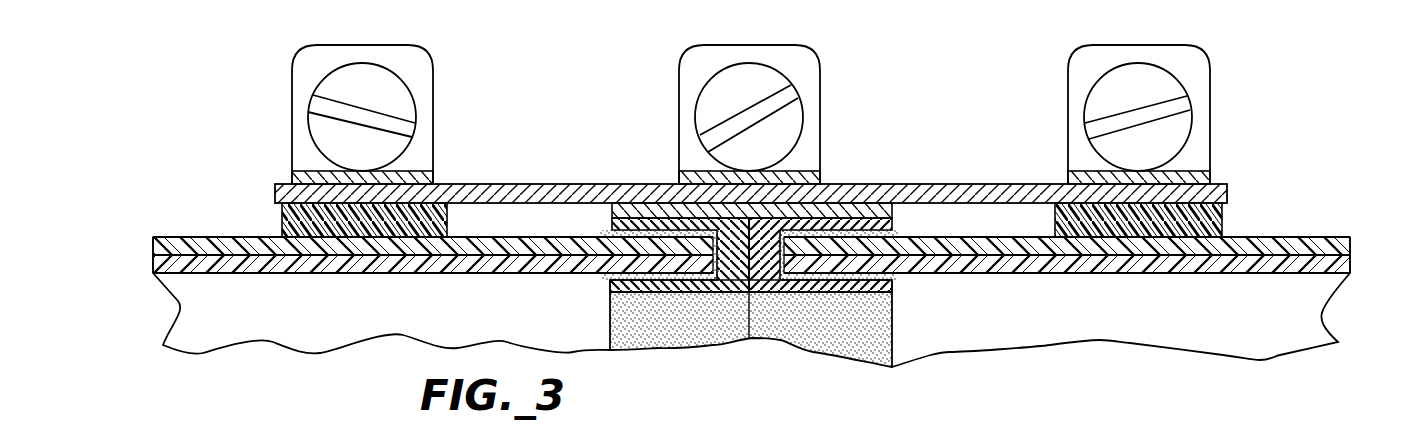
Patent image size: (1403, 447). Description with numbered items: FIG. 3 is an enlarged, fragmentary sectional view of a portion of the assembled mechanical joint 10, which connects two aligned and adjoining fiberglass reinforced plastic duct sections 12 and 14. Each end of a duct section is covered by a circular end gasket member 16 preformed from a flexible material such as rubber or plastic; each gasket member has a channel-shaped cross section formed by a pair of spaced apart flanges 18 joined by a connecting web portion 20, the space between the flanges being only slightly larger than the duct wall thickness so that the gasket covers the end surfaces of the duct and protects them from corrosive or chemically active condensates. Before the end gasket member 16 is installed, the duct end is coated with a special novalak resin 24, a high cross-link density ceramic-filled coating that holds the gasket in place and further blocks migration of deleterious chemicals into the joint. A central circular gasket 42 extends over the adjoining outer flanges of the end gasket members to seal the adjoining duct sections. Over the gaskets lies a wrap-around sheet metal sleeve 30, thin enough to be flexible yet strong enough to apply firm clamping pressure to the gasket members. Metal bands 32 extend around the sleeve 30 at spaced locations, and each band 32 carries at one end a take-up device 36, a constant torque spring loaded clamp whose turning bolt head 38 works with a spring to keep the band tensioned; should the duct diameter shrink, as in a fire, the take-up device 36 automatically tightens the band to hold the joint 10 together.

The mechanical joint 10 is at (763, 212).
The duct section 12 is at (230, 237).
The duct section 14 is at (1303, 237).
The end gasket member 16 is at (897, 235).
The flanges 18 is at (892, 280).
The web portion 20 is at (763, 262).
The resin 24 is at (607, 278).
The sheet metal sleeve 30 is at (903, 184).
The bands 32 is at (1205, 180).
The take-up device 36 is at (442, 84).
The head 38 is at (373, 72).
The central circular gasket 42 is at (610, 206).